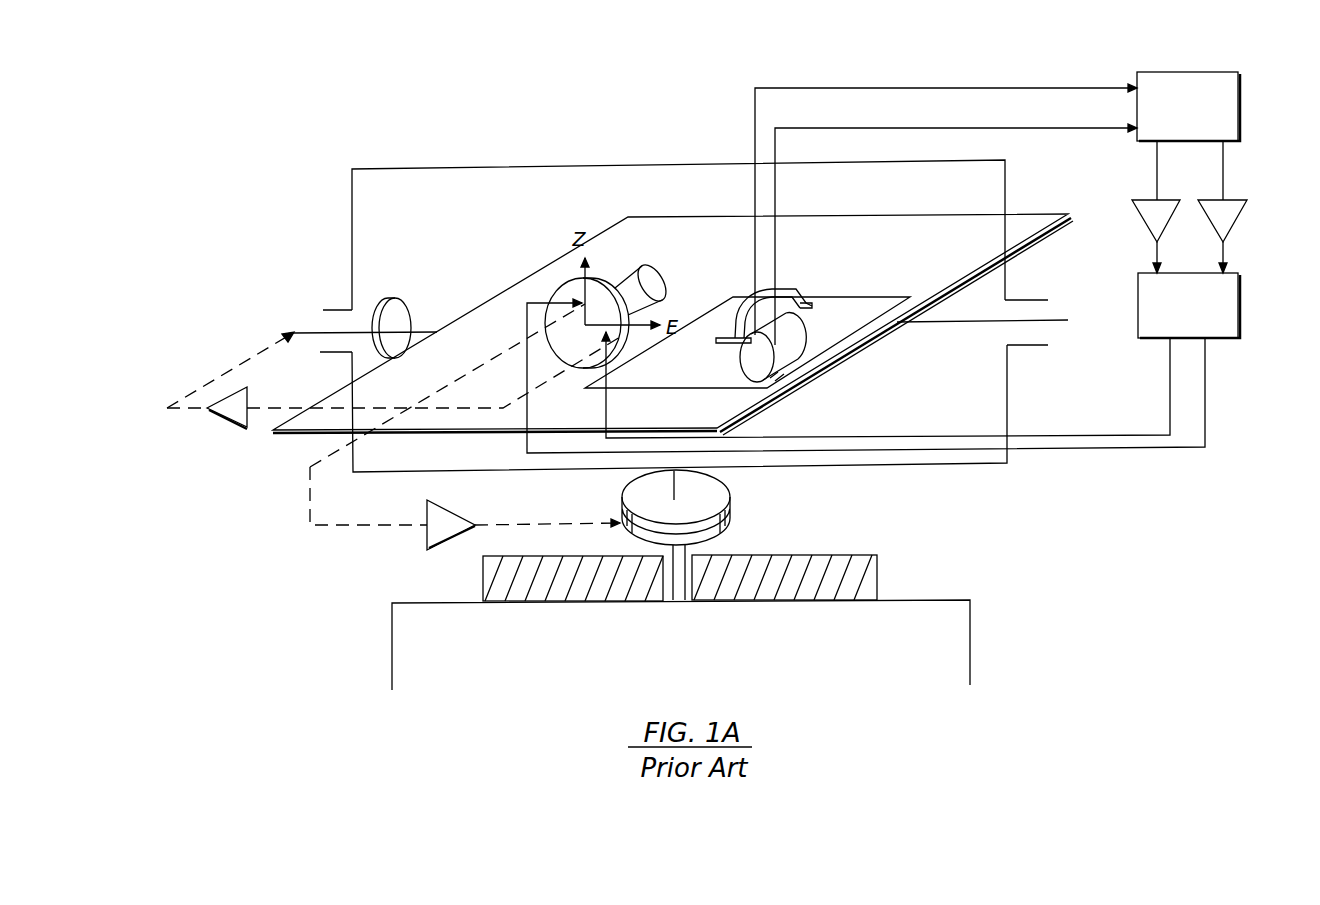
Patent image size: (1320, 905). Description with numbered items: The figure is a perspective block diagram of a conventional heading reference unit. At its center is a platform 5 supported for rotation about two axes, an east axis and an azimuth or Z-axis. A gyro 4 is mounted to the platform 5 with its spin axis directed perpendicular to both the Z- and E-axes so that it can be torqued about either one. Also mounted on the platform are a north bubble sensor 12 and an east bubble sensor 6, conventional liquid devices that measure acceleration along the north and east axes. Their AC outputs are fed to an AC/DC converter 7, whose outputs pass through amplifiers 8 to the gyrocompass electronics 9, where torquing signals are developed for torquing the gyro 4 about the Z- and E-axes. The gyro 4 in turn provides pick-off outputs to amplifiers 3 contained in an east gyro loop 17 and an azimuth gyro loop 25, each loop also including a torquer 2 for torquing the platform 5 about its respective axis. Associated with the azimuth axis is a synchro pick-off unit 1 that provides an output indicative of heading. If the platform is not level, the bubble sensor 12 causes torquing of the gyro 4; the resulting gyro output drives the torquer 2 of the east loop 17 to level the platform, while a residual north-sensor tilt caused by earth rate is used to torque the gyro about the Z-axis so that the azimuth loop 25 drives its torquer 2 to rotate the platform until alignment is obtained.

The synchro pick-off unit 1 is at (733, 512).
The torquer 2 is at (400, 314).
The amplifier 3 is at (232, 416).
The gyro 4 is at (640, 282).
The platform 5 is at (953, 288).
The east bubble sensor 6 is at (790, 290).
The AC/DC converter 7 is at (1228, 118).
The amplifiers 8 is at (1224, 214).
The gyrocompass electronics 9 is at (1240, 305).
The north bubble sensor 12 is at (775, 358).
The east gyro loop 17 is at (236, 349).
The azimuth gyro loop 25 is at (402, 545).